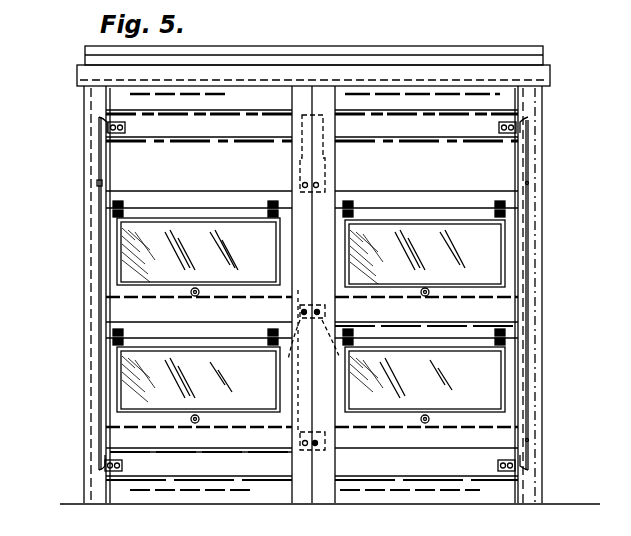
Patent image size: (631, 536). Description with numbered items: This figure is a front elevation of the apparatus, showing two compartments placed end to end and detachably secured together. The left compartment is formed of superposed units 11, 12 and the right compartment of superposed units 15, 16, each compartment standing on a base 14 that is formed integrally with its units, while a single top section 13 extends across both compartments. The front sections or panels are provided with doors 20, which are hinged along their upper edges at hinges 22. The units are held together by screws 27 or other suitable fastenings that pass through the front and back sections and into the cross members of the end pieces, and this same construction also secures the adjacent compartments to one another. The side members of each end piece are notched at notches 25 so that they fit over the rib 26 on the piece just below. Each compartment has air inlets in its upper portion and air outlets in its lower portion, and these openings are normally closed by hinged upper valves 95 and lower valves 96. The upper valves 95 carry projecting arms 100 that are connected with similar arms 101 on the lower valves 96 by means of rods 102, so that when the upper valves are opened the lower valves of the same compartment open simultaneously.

The superposed unit 11 is at (520, 432).
The superposed unit 12 is at (518, 305).
The top section 13 is at (545, 67).
The base 14 is at (205, 492).
The superposed unit 15 is at (125, 432).
The superposed unit 16 is at (120, 290).
The door 20 is at (125, 320).
The hinge 22 is at (122, 203).
The notch 25 is at (325, 185).
The rib 26 is at (328, 190).
The screw 27 is at (314, 183).
The upper valve 95 is at (210, 108).
The lower valve 96 is at (158, 472).
The projecting arm 100 is at (100, 128).
The arm 101 is at (100, 470).
The rod 102 is at (100, 146).